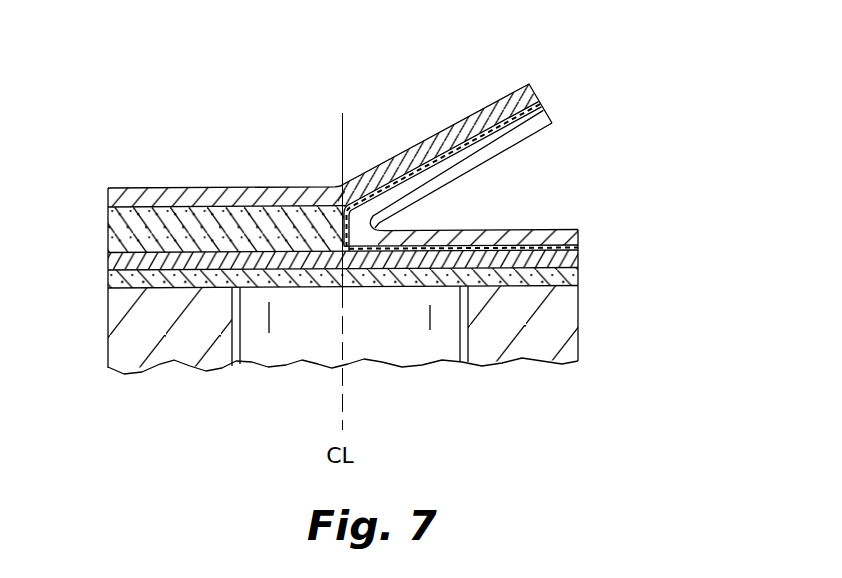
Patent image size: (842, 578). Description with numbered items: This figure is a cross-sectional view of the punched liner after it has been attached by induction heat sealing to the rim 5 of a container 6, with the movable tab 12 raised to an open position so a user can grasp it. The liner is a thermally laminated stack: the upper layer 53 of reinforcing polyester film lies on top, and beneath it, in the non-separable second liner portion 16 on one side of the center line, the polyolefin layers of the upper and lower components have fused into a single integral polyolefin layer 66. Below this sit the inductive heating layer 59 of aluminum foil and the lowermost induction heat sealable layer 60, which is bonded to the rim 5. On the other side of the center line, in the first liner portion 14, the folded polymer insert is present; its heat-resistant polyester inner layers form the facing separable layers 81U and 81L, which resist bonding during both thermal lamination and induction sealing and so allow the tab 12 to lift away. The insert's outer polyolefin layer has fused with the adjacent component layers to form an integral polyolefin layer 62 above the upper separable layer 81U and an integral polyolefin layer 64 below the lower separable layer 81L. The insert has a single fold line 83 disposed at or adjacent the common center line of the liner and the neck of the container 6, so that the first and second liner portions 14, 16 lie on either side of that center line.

The movable tab 12 is at (350, 160).
The first liner portion 14 is at (372, 157).
The second liner portion 16 is at (312, 187).
The upper layer 53 is at (108, 196).
The integral polyolefin layer 66 is at (312, 229).
The inductive heating layer 59 is at (108, 262).
The induction heat sealable layer 60 is at (108, 280).
The integral polyolefin layer 62 is at (541, 103).
The upper separable layer 81U is at (553, 122).
The lower separable layer 81L is at (580, 246).
The fold line 83 is at (421, 209).
The integral polyolefin layer 64 is at (580, 251).
The rim 5 is at (333, 281).
The container 6 is at (580, 334).